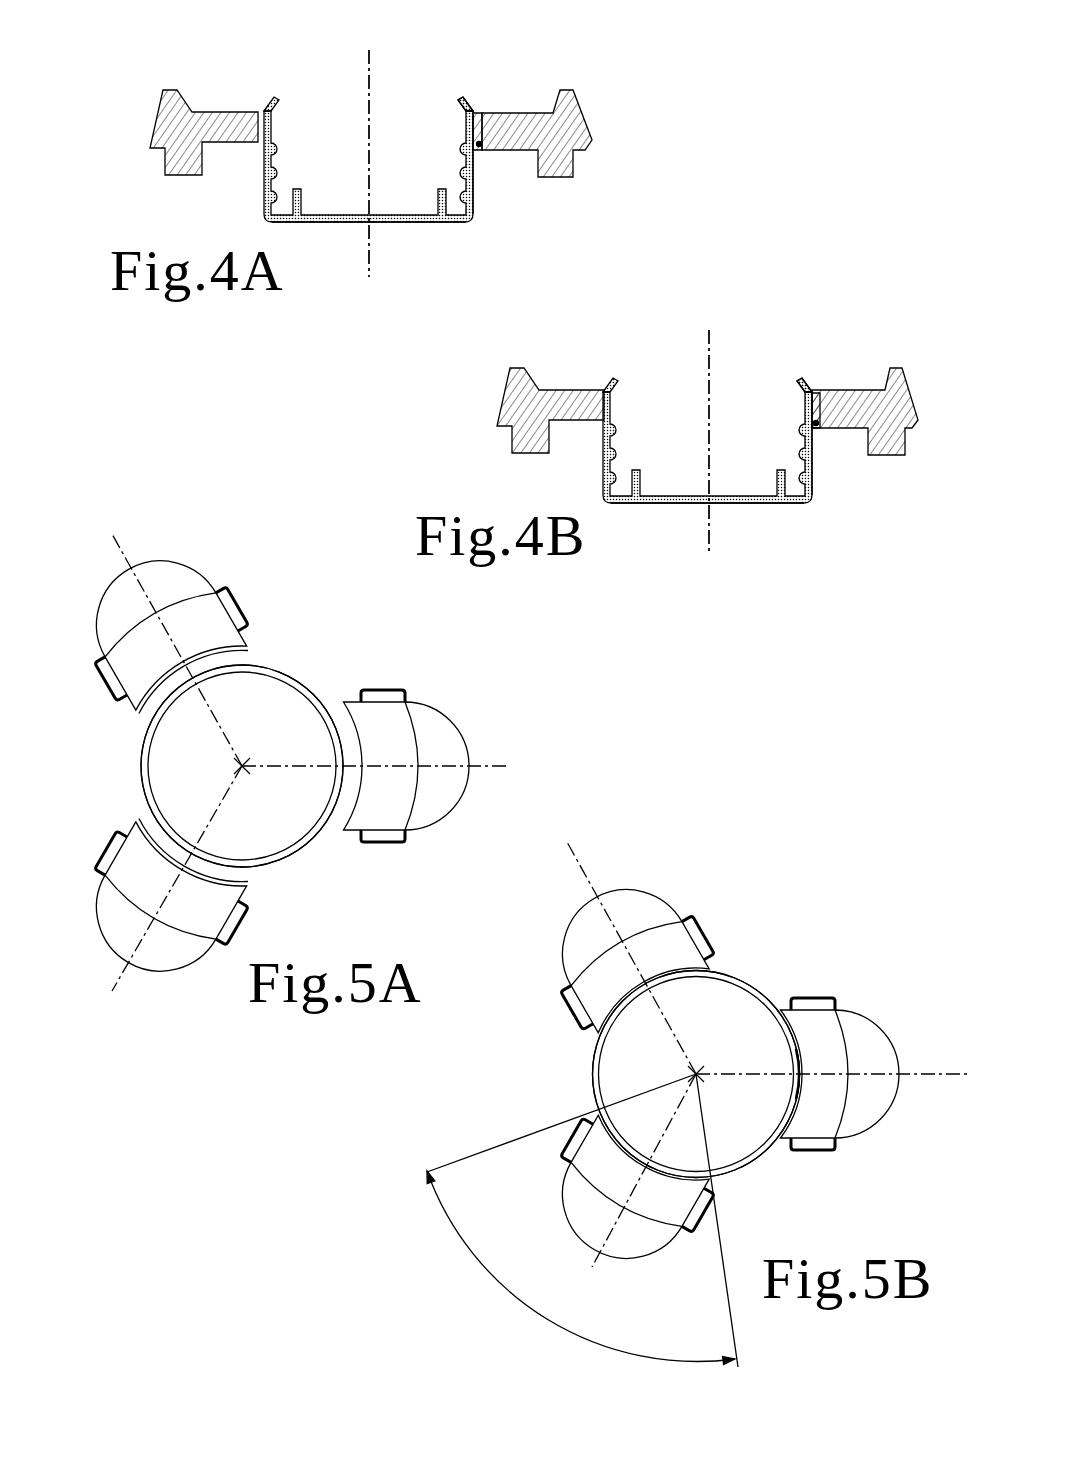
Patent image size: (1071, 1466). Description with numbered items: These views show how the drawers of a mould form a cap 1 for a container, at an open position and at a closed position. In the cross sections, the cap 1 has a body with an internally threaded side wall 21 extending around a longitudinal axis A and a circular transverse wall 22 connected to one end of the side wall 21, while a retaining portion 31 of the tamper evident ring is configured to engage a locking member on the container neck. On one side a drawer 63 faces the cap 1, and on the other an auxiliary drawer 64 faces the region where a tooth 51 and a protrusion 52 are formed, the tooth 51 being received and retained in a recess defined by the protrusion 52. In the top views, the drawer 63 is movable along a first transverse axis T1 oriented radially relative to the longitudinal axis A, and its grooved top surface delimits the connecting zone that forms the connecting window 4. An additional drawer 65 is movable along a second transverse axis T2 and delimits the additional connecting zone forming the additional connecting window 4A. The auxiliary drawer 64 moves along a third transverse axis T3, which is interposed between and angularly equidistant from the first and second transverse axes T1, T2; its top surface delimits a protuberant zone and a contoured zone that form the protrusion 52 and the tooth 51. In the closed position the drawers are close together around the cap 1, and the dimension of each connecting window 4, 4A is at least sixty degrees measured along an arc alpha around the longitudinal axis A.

In FIG. 4A, the cap 1 is at (318, 268).
In FIG. 4B, the cap 1 is at (648, 541).
In FIG. 5A, the cap 1 is at (112, 763).
In FIG. 5B, the cap 1 is at (549, 1077).
In FIG. 4A, the connecting window 4 is at (255, 145).
In FIG. 4B, the connecting window 4 is at (707, 440).
In FIG. 5B, the connecting window 4 is at (617, 1160).
In FIG. 5B, the additional connecting window 4A is at (600, 1000).
In FIG. 4A, the side wall 21 is at (478, 205).
In FIG. 4B, the side wall 21 is at (814, 470).
In FIG. 4A, the transverse wall 22 is at (385, 225).
In FIG. 4B, the transverse wall 22 is at (735, 500).
In FIG. 4A, the retaining portion 31 is at (468, 102).
In FIG. 4B, the retaining portion 31 is at (801, 382).
In FIG. 4A, the tooth 51 is at (480, 122).
In FIG. 4B, the tooth 51 is at (817, 402).
In FIG. 5B, the tooth 51 is at (806, 1086).
In FIG. 4A, the protrusion 52 is at (482, 148).
In FIG. 4B, the protrusion 52 is at (819, 428).
In FIG. 4A, the drawer 63 is at (185, 128).
In FIG. 4B, the drawer 63 is at (545, 405).
In FIG. 5A, the drawer 63 is at (172, 948).
In FIG. 5B, the drawer 63 is at (672, 1200).
In FIG. 4A, the auxiliary drawer 64 is at (527, 123).
In FIG. 4B, the auxiliary drawer 64 is at (862, 400).
In FIG. 5A, the auxiliary drawer 64 is at (441, 731).
In FIG. 5B, the auxiliary drawer 64 is at (825, 1040).
In FIG. 5A, the additional drawer 65 is at (170, 576).
In FIG. 5B, the additional drawer 65 is at (638, 910).
In FIG. 4A, the longitudinal axis A is at (372, 62).
In FIG. 4B, the longitudinal axis A is at (712, 340).
In FIG. 5A, the longitudinal axis A is at (282, 812).
In FIG. 5B, the longitudinal axis A is at (702, 1076).
In FIG. 5A, the first transverse axis T1 is at (113, 992).
In FIG. 5B, the first transverse axis T1 is at (595, 1265).
In FIG. 5A, the second transverse axis T2 is at (118, 556).
In FIG. 5B, the second transverse axis T2 is at (580, 865).
In FIG. 5A, the third transverse axis T3 is at (490, 766).
In FIG. 5B, the third transverse axis T3 is at (930, 1076).
In FIG. 5B, the arc alpha is at (582, 1220).